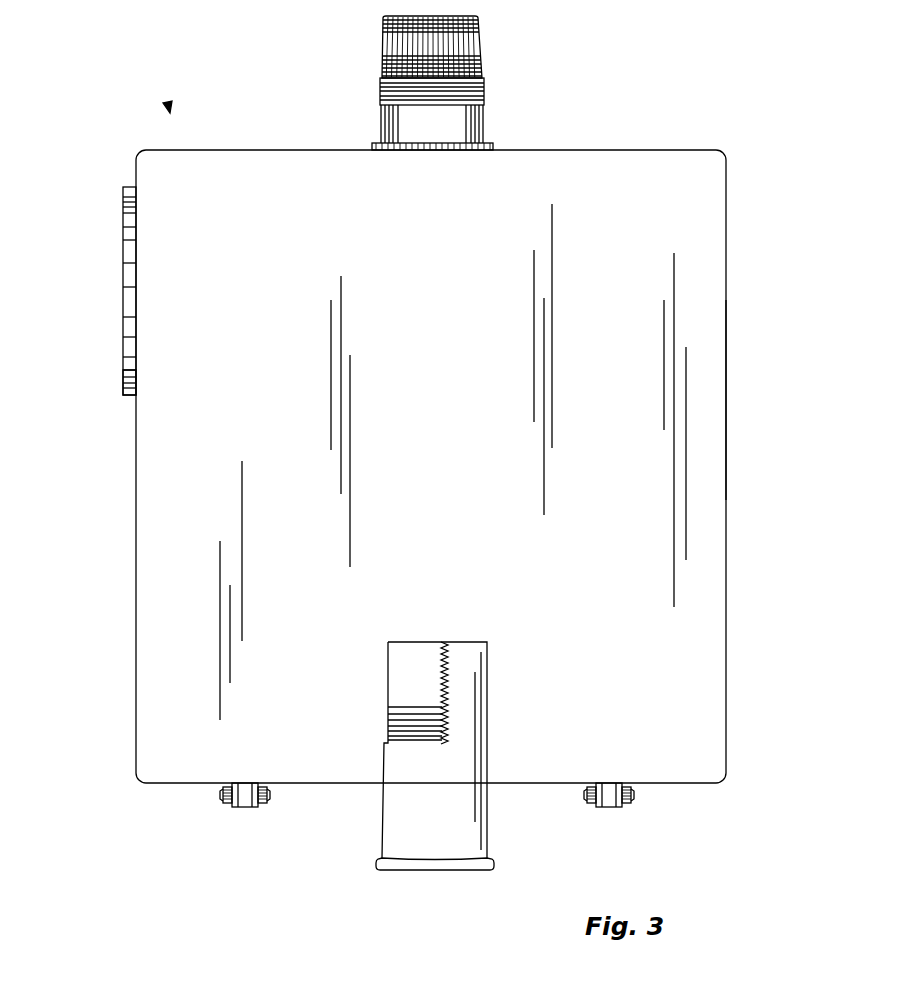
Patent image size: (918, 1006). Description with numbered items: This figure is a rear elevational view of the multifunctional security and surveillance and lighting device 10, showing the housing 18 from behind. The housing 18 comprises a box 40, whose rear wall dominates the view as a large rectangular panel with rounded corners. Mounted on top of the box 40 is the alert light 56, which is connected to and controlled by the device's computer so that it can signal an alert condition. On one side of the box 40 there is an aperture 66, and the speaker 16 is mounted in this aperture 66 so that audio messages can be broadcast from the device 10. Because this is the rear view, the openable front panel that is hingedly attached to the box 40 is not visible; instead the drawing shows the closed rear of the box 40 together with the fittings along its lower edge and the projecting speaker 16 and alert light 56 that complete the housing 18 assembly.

The multifunctional security and surveillance and lighting device 10 is at (167, 108).
The speaker 16 is at (123, 273).
The housing 18 is at (727, 403).
The box of housing 40 is at (574, 170).
The alert light 56 is at (482, 55).
The aperture of box 66 is at (133, 397).